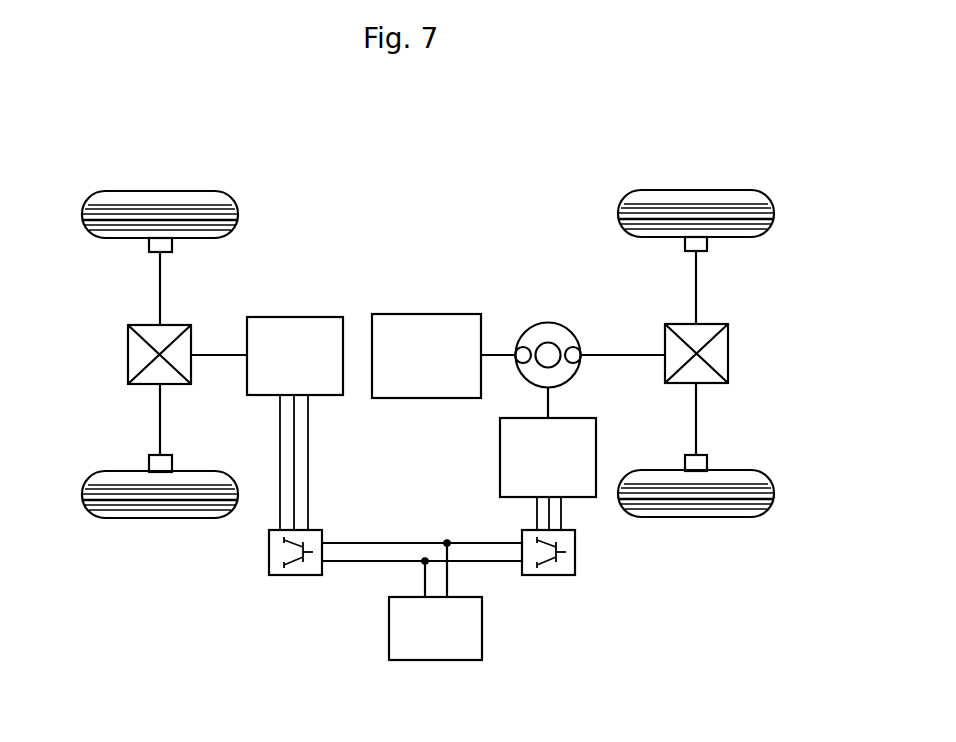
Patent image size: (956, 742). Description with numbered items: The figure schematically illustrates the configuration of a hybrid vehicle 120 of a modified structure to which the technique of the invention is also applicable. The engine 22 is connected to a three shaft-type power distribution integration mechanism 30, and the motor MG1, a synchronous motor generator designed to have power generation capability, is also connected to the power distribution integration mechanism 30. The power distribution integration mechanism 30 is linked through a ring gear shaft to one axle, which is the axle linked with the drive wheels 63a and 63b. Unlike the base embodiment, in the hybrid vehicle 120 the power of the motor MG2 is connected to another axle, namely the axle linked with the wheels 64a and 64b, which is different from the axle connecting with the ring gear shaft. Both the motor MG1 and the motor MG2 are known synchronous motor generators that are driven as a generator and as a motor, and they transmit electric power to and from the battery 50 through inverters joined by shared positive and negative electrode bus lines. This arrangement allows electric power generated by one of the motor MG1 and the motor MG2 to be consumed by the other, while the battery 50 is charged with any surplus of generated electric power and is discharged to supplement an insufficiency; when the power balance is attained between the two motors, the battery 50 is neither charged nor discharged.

The hybrid vehicle 120 is at (455, 170).
The wheel 64a is at (160, 191).
The wheel 64b is at (159, 518).
The drive wheel 63a is at (696, 190).
The drive wheel 63b is at (697, 517).
The engine 22 is at (427, 314).
The power distribution integration mechanism 30 is at (552, 322).
The battery 50 is at (482, 628).
The motor MG1 is at (498, 456).
The motor MG2 is at (297, 316).